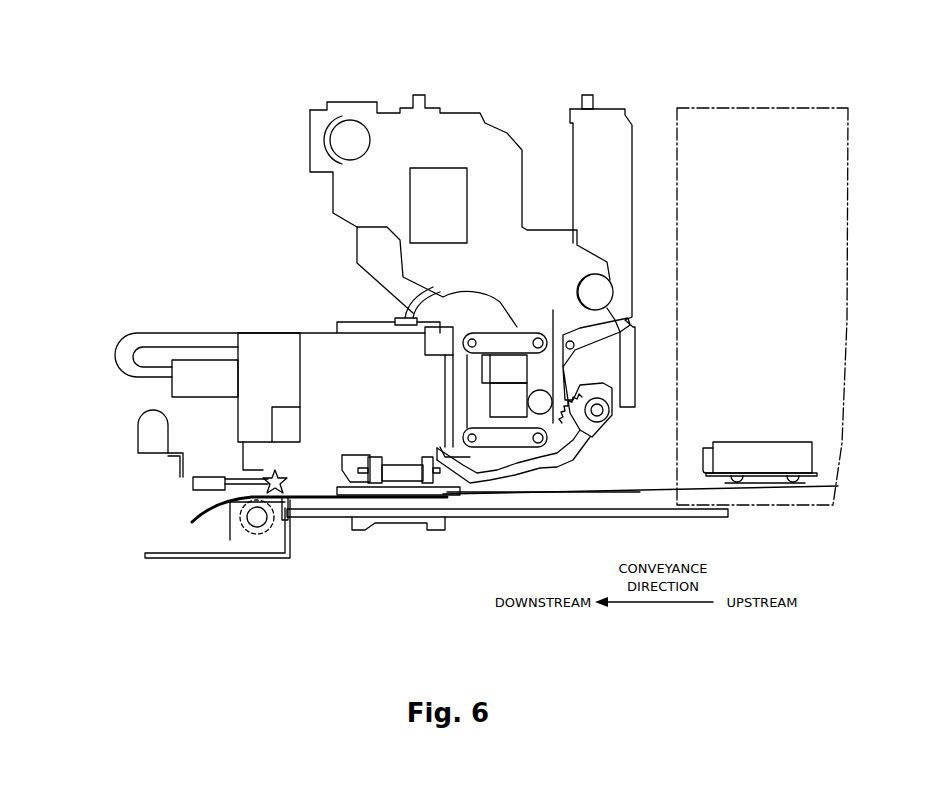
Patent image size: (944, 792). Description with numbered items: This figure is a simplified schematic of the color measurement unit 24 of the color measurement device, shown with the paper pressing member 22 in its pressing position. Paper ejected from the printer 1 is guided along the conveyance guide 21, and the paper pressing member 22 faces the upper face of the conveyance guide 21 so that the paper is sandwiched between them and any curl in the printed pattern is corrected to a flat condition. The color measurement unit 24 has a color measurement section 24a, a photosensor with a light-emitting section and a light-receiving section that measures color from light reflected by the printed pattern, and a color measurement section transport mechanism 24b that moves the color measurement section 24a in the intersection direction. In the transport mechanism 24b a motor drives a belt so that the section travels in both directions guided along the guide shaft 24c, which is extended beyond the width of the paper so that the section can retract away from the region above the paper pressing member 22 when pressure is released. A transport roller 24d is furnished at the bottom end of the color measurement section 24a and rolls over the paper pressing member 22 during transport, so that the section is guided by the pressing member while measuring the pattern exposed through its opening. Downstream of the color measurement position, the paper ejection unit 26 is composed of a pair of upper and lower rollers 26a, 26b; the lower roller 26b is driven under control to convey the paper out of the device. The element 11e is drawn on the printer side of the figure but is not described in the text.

The printer 1 is at (767, 108).
The cutter carriage 11e is at (804, 422).
The conveyance guide 21 is at (408, 503).
The paper pressing member 22 is at (343, 508).
The color measurement unit 24 is at (284, 233).
The color measurement section 24a is at (325, 345).
The color measurement section transport mechanism 24b is at (650, 230).
The guide shaft 24c is at (613, 292).
The transport roller 24d is at (440, 463).
The paper ejection unit 26 is at (126, 435).
The upper roller 26a is at (268, 474).
The lower roller 26b is at (258, 532).